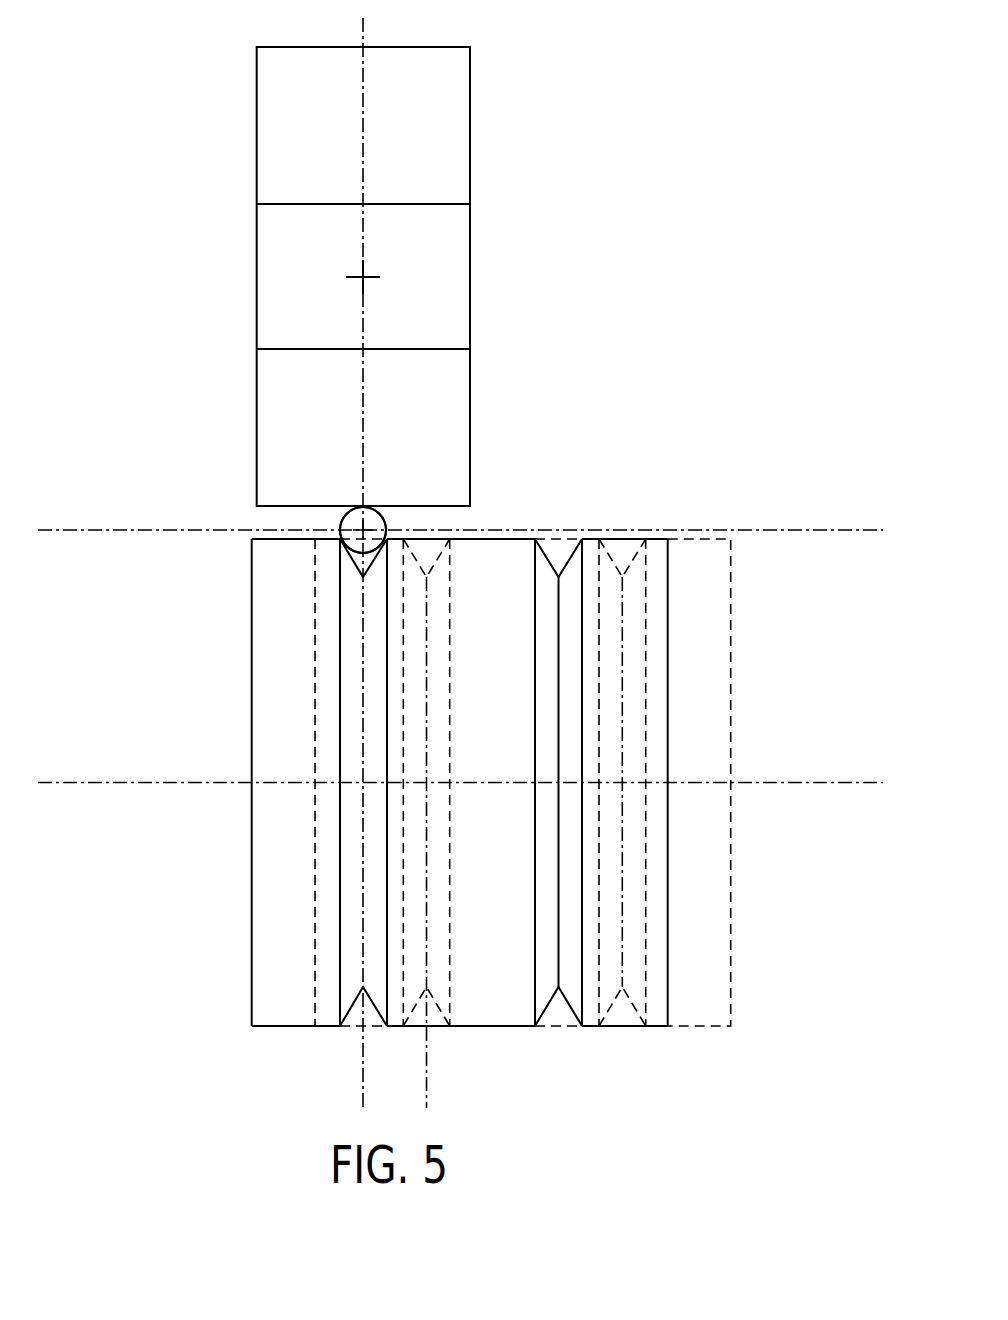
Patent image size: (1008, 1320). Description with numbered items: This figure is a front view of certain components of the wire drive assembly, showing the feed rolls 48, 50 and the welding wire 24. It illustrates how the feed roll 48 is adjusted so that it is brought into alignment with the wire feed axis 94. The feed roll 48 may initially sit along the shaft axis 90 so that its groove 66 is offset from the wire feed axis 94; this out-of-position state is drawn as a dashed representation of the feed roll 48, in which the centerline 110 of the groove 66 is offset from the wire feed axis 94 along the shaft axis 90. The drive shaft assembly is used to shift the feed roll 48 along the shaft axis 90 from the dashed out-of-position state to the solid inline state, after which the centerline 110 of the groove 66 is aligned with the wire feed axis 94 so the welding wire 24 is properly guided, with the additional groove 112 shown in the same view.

The welding wire 24 is at (394, 520).
The feed roll 48 is at (517, 539).
The feed roll 50 is at (470, 118).
The groove 66 is at (355, 1007).
The shaft axis 90 is at (793, 782).
The wire feed axis 94 is at (340, 521).
The centerline 110 is at (427, 1078).
The third groove 112 is at (570, 1008).